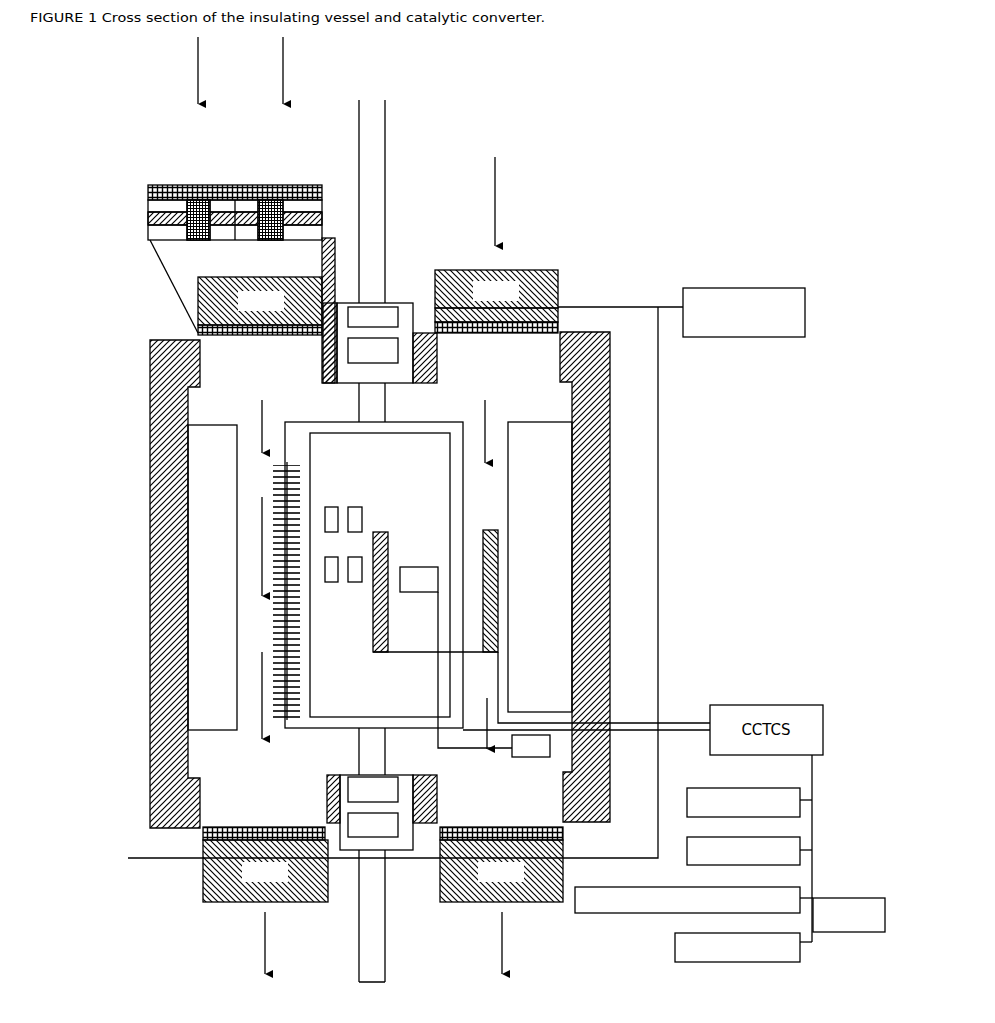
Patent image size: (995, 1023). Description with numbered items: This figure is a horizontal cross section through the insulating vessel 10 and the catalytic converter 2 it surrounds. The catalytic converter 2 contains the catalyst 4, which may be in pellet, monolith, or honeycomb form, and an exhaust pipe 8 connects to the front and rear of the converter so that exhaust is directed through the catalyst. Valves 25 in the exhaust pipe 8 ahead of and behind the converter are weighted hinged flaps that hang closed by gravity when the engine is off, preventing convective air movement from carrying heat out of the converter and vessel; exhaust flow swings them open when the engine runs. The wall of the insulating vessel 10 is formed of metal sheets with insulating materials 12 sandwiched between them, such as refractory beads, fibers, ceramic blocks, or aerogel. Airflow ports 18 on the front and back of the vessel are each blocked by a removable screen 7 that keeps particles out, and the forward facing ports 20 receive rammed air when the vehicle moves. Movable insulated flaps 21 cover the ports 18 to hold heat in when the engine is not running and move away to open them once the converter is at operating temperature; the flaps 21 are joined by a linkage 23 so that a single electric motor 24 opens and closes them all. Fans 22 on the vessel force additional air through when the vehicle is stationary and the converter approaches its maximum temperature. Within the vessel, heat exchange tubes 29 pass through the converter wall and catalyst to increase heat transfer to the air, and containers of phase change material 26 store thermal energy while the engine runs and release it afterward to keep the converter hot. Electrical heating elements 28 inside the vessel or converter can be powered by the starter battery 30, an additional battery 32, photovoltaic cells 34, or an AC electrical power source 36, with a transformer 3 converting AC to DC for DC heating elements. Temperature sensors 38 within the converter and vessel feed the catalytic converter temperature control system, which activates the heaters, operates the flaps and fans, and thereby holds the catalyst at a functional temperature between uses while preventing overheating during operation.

The catalytic converter 2 is at (374, 575).
The transformer 3 is at (849, 915).
The catalyst 4 is at (373, 611).
The screen 7 is at (148, 190).
The exhaust pipe 8 is at (385, 521).
The insulating vessel 10 is at (321, 580).
The insulating materials 12 is at (160, 488).
The airflow ports 18 is at (208, 363).
The forward facing ports 20 is at (150, 282).
The movable insulated flaps 21 is at (198, 302).
The fans 22 is at (198, 266).
The linkage 23 is at (439, 582).
The electric motor 24 is at (744, 312).
The valves 25 is at (380, 576).
The phase change material 26 is at (113, 563).
The electrical heating elements 28 is at (363, 618).
The heat exchange tubes 29 is at (325, 522).
The starter battery 30 is at (749, 802).
The additional battery 32 is at (694, 900).
The photovoltaic cells 34 is at (749, 851).
The AC electrical power source 36 is at (743, 947).
The temperature sensors 38 is at (475, 662).